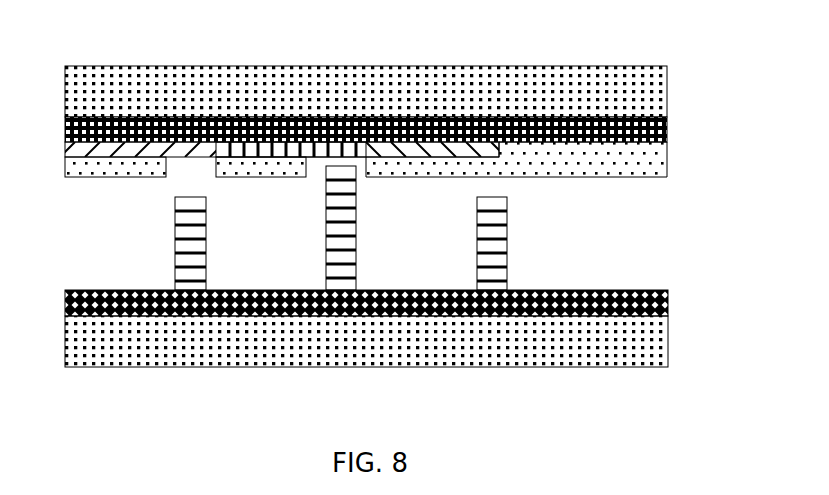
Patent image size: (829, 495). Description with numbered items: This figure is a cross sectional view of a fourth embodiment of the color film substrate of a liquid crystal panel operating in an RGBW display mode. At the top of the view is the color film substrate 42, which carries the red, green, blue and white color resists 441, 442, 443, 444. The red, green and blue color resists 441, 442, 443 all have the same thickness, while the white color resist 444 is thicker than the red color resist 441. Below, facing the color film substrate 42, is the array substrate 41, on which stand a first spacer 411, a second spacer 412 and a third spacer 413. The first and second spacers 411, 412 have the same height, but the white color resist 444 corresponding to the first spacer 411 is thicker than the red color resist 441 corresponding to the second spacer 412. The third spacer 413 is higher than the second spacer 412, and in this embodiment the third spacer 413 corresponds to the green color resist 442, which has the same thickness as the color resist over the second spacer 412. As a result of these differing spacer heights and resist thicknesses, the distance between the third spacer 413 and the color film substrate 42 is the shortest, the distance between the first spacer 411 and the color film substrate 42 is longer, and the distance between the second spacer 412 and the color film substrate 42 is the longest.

The array substrate 41 is at (645, 367).
The color film substrate 42 is at (366, 97).
The first spacer 411 is at (507, 247).
The second spacer 412 is at (206, 248).
The third spacer 413 is at (356, 248).
The red color resist 441 is at (65, 148).
The green color resist 442 is at (282, 152).
The blue color resist 443 is at (420, 150).
The white color resist 444 is at (222, 166).